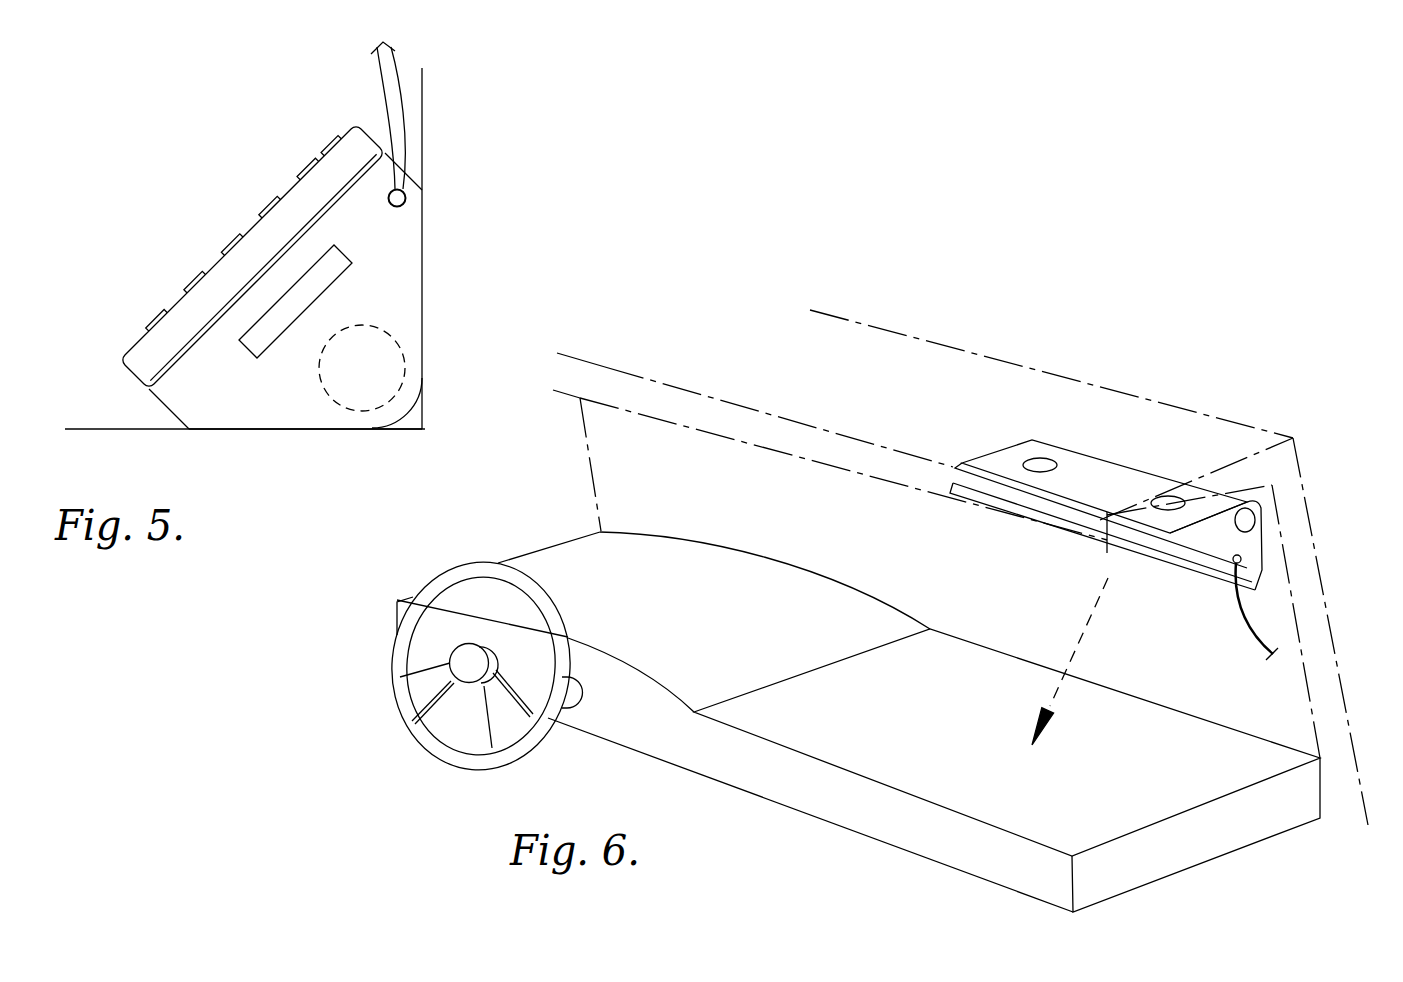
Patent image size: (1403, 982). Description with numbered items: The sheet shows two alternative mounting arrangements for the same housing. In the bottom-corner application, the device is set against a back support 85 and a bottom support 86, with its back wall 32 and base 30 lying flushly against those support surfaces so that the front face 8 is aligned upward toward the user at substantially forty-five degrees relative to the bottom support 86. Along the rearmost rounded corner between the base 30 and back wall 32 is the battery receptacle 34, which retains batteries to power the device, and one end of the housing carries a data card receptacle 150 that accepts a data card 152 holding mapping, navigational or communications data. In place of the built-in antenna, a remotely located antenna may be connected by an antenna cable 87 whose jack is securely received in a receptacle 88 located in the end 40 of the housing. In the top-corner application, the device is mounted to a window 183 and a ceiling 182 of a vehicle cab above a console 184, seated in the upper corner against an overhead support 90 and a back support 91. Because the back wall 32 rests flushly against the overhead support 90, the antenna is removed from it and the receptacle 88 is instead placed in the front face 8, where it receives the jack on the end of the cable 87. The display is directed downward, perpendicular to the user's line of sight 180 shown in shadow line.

In FIG. 5, the front face 8 is at (173, 303).
In FIG. 5, the base 30 is at (240, 430).
In FIG. 5, the back wall 32 is at (423, 298).
In FIG. 5, the battery receptacle 34 is at (380, 388).
In FIG. 5, the end 40 is at (412, 338).
In FIG. 5, the back support 85 is at (424, 100).
In FIG. 5, the bottom support 86 is at (102, 430).
In FIG. 5, the antenna cable 87 is at (377, 77).
In FIG. 6, the antenna cable 87 is at (1235, 613).
In FIG. 5, the receptacle 88 is at (406, 205).
In FIG. 6, the receptacle 88 is at (1253, 583).
In FIG. 5, the data card receptacle 150 is at (263, 308).
In FIG. 5, the data card 152 is at (322, 268).
In FIG. 6, the overhead support 90 is at (1113, 538).
In FIG. 6, the back support 91 is at (1265, 518).
In FIG. 6, the line of sight 180 is at (1073, 651).
In FIG. 6, the ceiling 182 is at (1090, 397).
In FIG. 6, the window 183 is at (1317, 663).
In FIG. 6, the console 184 is at (1177, 792).